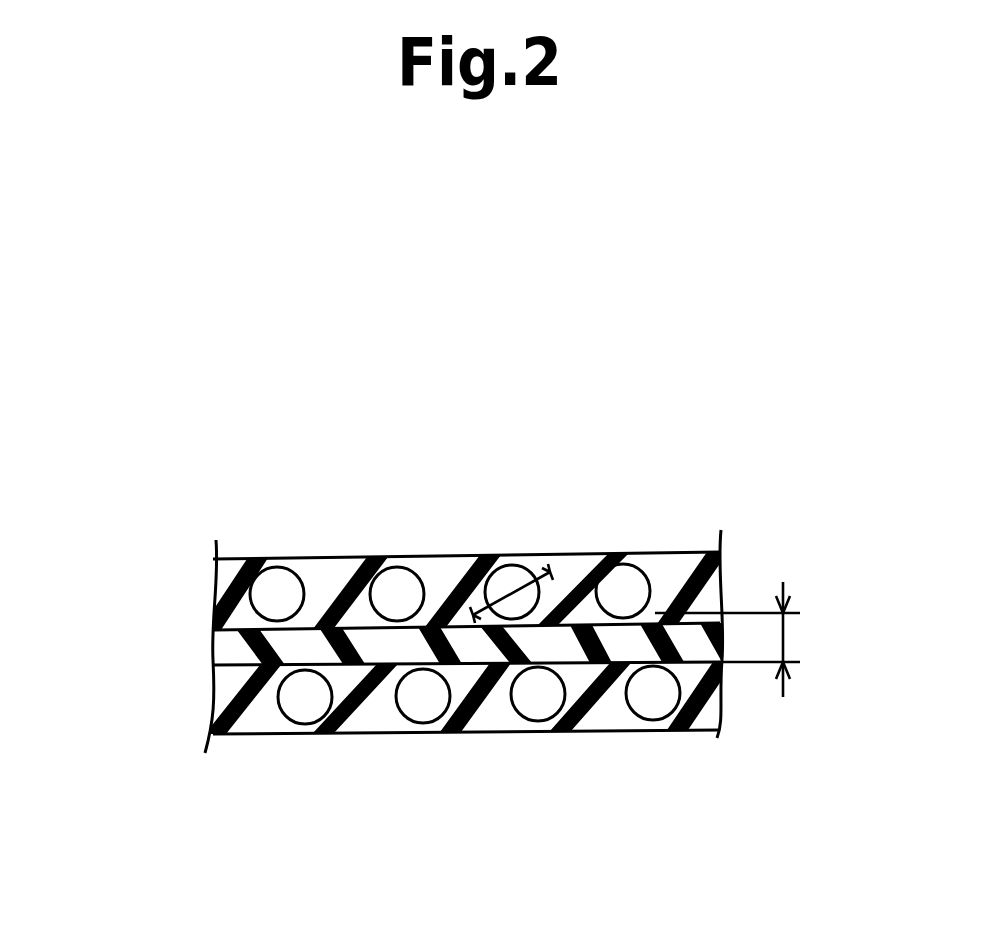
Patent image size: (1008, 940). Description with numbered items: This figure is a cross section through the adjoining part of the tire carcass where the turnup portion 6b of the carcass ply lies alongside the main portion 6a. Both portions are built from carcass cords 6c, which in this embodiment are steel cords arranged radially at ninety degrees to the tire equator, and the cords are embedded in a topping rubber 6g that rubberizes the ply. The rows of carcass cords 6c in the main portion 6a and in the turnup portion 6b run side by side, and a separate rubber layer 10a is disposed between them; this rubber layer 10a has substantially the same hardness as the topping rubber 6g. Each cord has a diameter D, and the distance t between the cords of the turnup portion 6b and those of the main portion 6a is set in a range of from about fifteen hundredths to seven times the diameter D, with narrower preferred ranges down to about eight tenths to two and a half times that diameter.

The main portion 6a is at (670, 552).
The turnup portion 6b is at (687, 732).
The carcass cords 6c is at (277, 595).
The topping rubber 6g is at (345, 583).
The rubber layer 10a is at (237, 643).
The diameter of the carcass cords D is at (512, 592).
The distance between carcass cords t is at (783, 640).